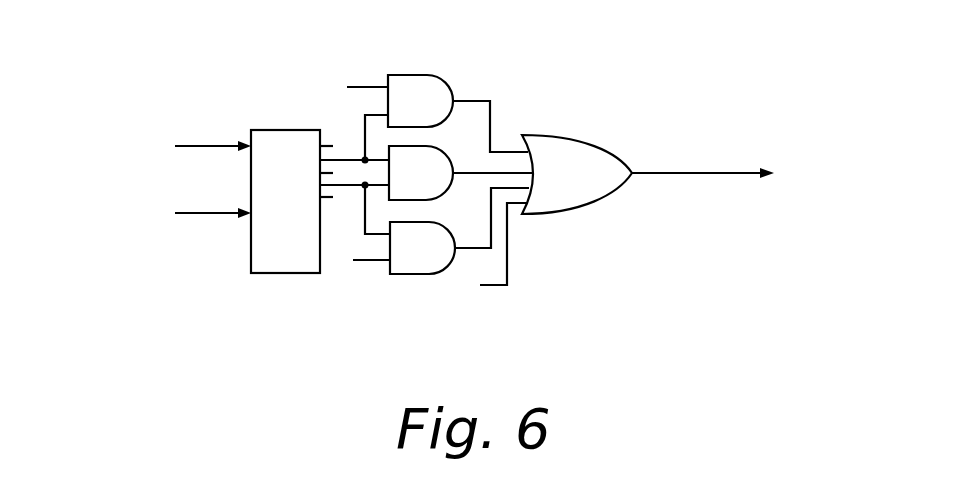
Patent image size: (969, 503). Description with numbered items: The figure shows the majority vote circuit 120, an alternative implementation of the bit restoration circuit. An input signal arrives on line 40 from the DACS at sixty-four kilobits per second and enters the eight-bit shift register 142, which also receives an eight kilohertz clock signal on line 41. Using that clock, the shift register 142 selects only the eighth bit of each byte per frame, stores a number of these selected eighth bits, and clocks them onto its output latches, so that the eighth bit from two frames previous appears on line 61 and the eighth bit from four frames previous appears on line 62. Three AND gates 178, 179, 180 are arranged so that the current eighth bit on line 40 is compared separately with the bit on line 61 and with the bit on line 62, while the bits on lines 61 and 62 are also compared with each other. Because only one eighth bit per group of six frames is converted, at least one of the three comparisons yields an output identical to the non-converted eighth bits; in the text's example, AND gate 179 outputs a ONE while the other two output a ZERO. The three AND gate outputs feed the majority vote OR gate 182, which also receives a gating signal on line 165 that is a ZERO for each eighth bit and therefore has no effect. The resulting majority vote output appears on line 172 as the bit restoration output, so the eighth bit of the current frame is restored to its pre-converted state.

The input signal line 40 is at (203, 145).
The clock signal line 41 is at (210, 215).
The line carrying eighth bit two frames previous 61 is at (348, 157).
The line carrying eighth bit four frames previous 62 is at (352, 187).
The majority vote circuit 120 is at (660, 287).
The eight-bit shift register 142 is at (290, 225).
The gating signal input line 165 is at (495, 286).
The bit restoration output line 172 is at (737, 177).
The first AND gate 178 is at (417, 75).
The second AND gate 179 is at (446, 155).
The third AND gate 180 is at (415, 275).
The majority vote OR gate 182 is at (565, 133).